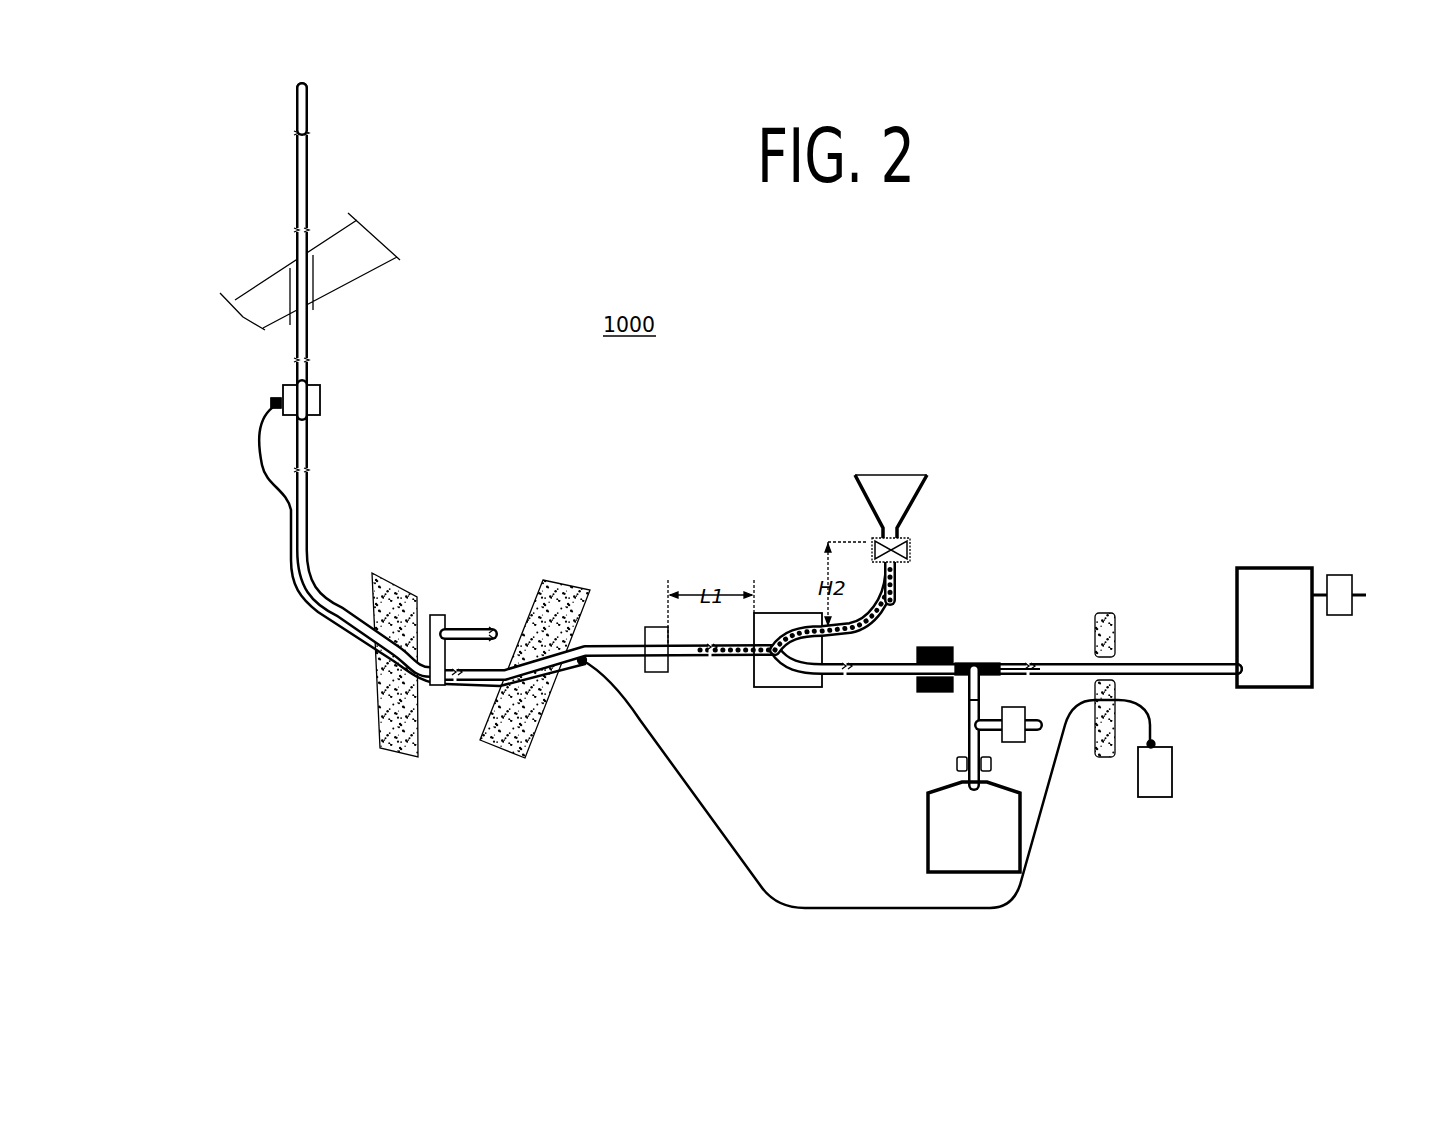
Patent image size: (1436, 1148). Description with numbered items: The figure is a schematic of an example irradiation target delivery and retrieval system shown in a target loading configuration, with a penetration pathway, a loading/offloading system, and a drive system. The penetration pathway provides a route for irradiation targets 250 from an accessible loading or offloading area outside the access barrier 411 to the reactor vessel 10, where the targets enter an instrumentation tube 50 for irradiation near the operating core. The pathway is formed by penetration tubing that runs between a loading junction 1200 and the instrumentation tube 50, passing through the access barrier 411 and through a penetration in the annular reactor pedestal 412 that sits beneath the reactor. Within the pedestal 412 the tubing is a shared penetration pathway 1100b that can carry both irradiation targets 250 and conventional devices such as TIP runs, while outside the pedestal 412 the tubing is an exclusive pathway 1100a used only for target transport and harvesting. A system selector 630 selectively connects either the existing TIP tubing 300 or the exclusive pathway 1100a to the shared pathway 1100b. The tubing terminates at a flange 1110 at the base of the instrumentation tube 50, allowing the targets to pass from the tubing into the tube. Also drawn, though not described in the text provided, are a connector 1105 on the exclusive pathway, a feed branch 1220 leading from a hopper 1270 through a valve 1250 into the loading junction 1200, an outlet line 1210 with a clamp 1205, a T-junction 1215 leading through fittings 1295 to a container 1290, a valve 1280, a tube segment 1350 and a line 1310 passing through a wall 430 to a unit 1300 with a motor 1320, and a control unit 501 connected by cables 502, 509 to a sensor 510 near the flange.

The reactor vessel 10 is at (366, 262).
The instrumentation tube 50 is at (296, 208).
The irradiation target 250 is at (880, 618).
The TIP tubing 300 is at (480, 628).
The access barrier 411 is at (500, 746).
The reactor pedestal 412 is at (370, 718).
The third wall 430 is at (1103, 612).
The control unit 501 is at (1176, 773).
The cable 502 is at (1047, 855).
The cable 509 is at (289, 549).
The sensor 510 is at (271, 396).
The system selector 630 is at (438, 614).
The exclusive pathway 1100a is at (625, 643).
The shared penetration pathway 1100b is at (311, 522).
The connector 1105 is at (657, 680).
The flange 1110 is at (323, 396).
The loading junction 1200 is at (808, 691).
The clamp 1205 is at (933, 693).
The outlet tube 1210 is at (877, 680).
The T-junction 1215 is at (973, 662).
The feed tube 1220 is at (898, 575).
The valve 1250 is at (912, 542).
The funnel / hopper 1270 is at (863, 492).
The valve 1280 is at (1010, 703).
The collection container 1290 is at (926, 840).
The fitting 1295 is at (954, 765).
The pump 1300 is at (1271, 568).
The suction tube 1310 is at (1165, 660).
The motor 1320 is at (1343, 575).
The tube segment 1350 is at (1003, 663).